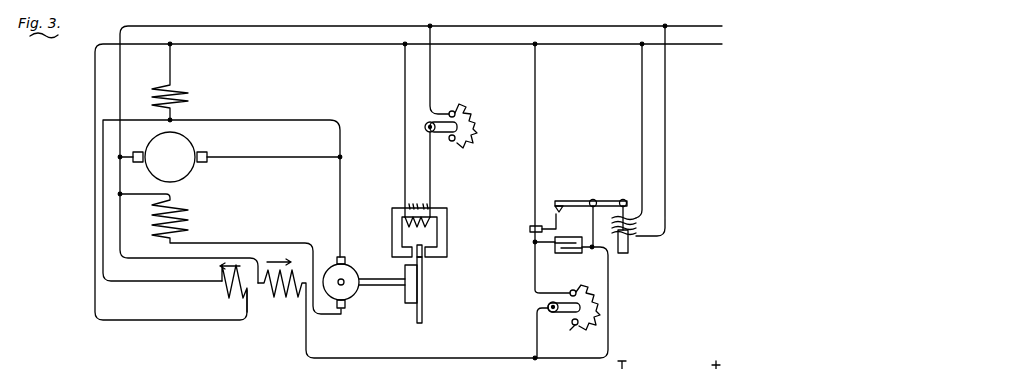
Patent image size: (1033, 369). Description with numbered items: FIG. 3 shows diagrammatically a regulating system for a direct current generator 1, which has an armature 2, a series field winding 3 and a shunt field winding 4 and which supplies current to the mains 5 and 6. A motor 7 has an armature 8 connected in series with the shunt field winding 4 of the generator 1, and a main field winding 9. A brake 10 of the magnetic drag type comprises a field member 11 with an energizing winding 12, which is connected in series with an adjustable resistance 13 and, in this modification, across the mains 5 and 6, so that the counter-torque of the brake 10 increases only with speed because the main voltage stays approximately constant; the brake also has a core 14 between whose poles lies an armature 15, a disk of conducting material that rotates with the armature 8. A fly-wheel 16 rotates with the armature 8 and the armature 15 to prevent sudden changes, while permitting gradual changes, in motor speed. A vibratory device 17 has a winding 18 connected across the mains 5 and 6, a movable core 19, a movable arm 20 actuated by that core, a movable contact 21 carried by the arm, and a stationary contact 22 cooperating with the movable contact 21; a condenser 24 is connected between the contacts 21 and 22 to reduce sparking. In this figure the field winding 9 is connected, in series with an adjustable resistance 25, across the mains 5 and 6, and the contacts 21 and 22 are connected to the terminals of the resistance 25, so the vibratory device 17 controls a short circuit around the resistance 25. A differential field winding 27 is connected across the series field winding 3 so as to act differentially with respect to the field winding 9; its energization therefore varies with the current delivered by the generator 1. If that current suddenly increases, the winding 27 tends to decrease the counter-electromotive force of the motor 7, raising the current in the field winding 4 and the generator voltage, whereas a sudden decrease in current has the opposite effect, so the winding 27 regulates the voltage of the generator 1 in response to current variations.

The direct current generator 1 is at (130, 145).
The armature 2 is at (200, 144).
The series field winding 3 is at (188, 98).
The shunt field winding 4 is at (196, 222).
The main 5 is at (363, 26).
The main 6 is at (364, 45).
The motor 7 is at (341, 278).
The armature 8 is at (355, 277).
The main field winding 9 is at (290, 300).
The brake 10 is at (435, 263).
The field member 11 is at (434, 210).
The energizing winding 12 is at (407, 207).
The adjustable resistance 13 is at (460, 131).
The core 14 is at (447, 237).
The armature 15 is at (417, 303).
The fly-wheel 16 is at (406, 302).
The vibratory device 17 is at (591, 211).
The winding 18 is at (637, 227).
The movable core 19 is at (632, 258).
The movable arm 20 is at (607, 200).
The movable contact 21 is at (556, 207).
The stationary contact 22 is at (556, 229).
The condenser 24 is at (558, 256).
The adjustable resistance 25 is at (577, 326).
The differential field winding 27 is at (225, 293).